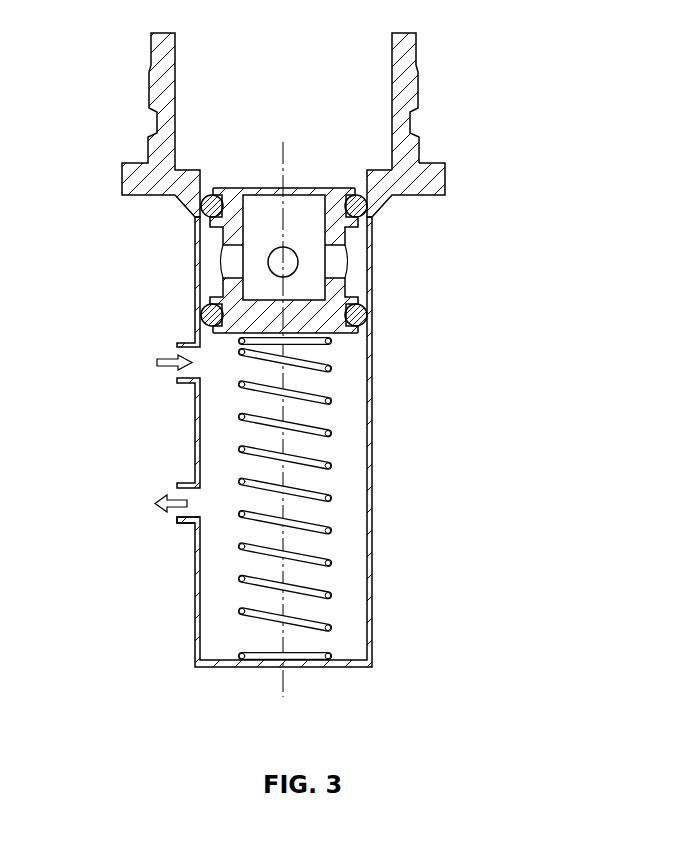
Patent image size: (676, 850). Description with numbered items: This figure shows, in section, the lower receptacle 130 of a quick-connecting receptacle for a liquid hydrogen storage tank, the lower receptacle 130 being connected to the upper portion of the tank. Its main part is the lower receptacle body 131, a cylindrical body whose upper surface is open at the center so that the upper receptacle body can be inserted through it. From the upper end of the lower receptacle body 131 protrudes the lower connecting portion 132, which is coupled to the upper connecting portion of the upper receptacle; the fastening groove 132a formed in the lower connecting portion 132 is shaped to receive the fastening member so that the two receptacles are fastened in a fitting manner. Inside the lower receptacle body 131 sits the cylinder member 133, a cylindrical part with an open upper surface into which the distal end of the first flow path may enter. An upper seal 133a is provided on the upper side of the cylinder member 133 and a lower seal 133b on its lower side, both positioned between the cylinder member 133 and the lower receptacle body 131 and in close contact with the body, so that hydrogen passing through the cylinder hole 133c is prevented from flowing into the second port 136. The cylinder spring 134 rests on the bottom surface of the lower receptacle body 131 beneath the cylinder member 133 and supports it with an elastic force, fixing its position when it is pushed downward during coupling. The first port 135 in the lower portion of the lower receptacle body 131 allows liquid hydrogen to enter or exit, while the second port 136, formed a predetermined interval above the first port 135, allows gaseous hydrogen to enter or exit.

The lower receptacle 130 is at (126, 136).
The lower receptacle body 131 is at (197, 257).
The lower connecting portion 132 is at (432, 175).
The fastening groove 132a is at (412, 123).
The cylinder member 133 is at (333, 237).
The upper seal 133a is at (198, 203).
The lower seal 133b is at (198, 308).
The cylinder hole 133c is at (333, 268).
The cylinder spring 134 is at (305, 423).
The first port 135 is at (183, 523).
The second port 136 is at (180, 385).